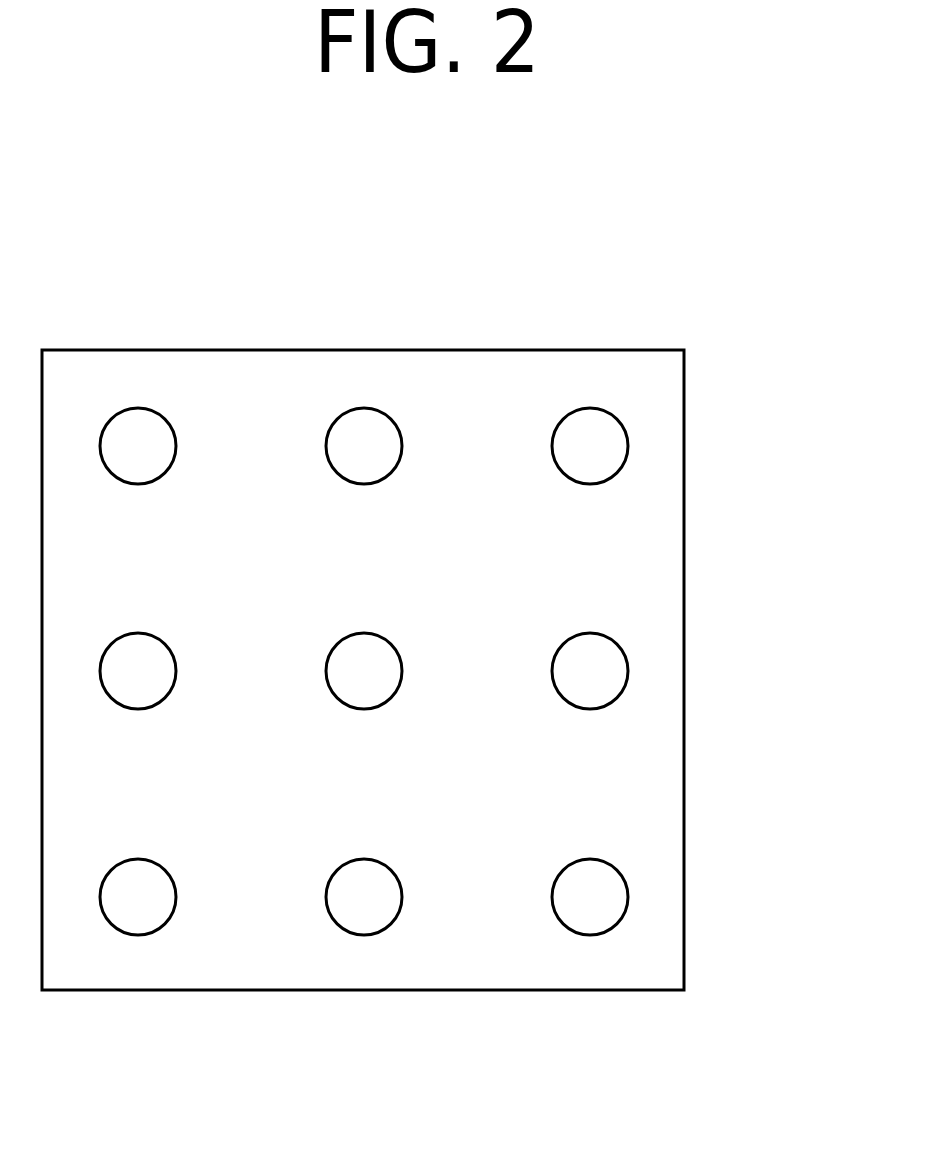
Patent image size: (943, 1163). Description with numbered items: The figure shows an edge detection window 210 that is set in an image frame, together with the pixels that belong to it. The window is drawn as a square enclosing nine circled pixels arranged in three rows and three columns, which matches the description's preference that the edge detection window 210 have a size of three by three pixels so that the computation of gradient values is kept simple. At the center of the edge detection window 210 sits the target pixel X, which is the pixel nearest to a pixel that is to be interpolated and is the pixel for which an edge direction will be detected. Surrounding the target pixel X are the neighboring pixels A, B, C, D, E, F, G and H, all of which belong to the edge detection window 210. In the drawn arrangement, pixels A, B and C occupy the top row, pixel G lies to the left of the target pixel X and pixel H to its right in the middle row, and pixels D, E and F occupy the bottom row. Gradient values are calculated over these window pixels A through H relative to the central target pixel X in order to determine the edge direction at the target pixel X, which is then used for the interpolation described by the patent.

The edge detection window 210 is at (684, 668).
The pixel A is at (138, 446).
The pixel B is at (364, 446).
The pixel C is at (590, 446).
The pixel D is at (138, 897).
The pixel E is at (364, 897).
The pixel F is at (590, 897).
The pixel G is at (138, 671).
The pixel H is at (590, 671).
The target pixel X is at (364, 671).